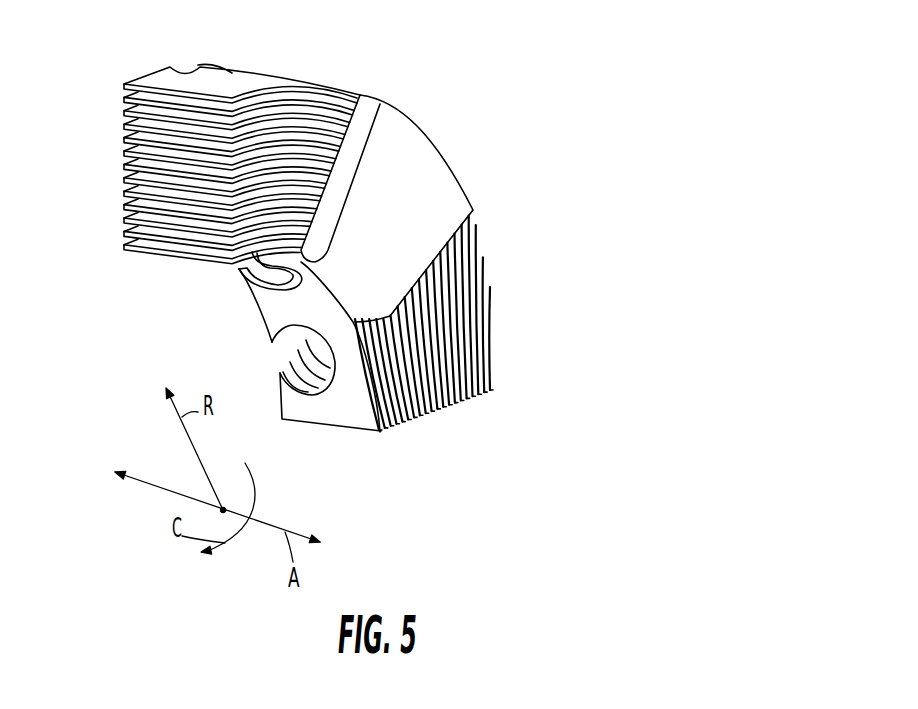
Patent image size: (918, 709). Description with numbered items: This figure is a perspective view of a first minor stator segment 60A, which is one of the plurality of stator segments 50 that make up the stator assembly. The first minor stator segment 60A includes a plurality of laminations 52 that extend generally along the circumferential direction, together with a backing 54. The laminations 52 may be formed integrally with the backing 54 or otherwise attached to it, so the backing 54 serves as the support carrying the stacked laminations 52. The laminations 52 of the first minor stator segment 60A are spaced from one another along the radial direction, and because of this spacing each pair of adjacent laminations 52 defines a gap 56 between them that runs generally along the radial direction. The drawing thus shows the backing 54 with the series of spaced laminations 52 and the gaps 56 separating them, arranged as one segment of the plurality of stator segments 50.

The plurality of stator segments 50 is at (310, 261).
The first minor stator segment 60A is at (310, 261).
The laminations 52 is at (255, 82).
The backing 54 is at (413, 147).
The gap 56 is at (122, 158).